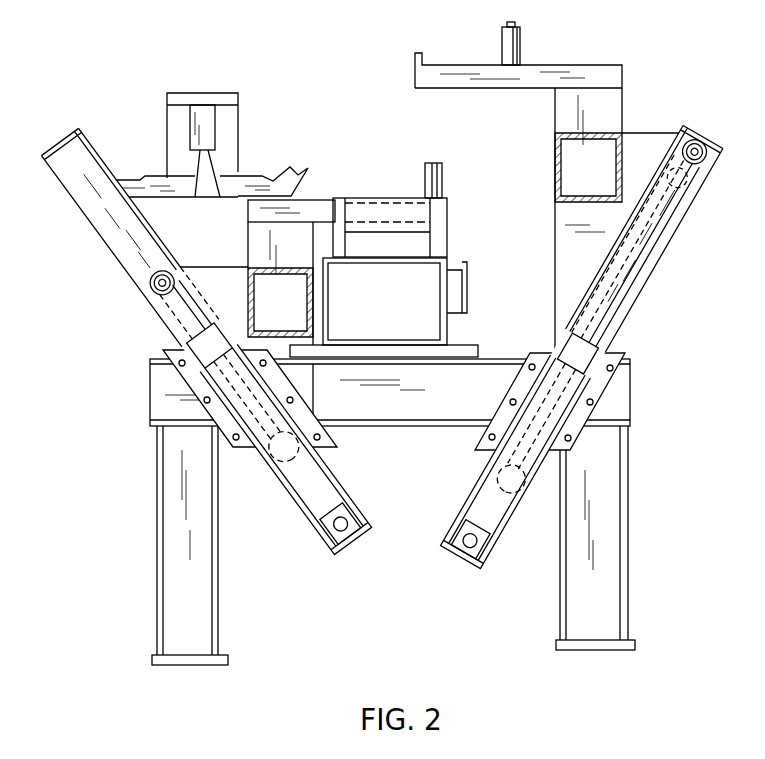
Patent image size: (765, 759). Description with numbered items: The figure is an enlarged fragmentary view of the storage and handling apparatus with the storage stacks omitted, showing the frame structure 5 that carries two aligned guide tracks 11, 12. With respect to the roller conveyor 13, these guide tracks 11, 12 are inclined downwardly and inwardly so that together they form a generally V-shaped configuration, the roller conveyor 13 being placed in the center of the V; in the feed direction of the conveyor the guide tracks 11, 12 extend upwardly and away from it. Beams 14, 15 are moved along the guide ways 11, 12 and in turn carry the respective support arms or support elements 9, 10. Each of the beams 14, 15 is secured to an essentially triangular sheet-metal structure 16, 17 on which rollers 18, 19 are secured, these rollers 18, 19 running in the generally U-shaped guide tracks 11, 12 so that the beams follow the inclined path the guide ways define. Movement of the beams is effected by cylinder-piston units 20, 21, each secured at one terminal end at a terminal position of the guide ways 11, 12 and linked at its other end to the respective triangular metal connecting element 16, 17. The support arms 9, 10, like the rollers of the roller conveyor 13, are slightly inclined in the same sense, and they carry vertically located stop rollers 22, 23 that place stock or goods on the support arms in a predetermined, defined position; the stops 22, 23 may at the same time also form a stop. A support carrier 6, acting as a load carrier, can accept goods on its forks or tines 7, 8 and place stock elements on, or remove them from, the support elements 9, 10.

The frame structure 5 is at (202, 625).
The support carrier 6 is at (205, 113).
The fork 7 is at (258, 172).
The tine 8 is at (150, 177).
The support element 9 is at (320, 210).
The support element 10 is at (452, 66).
The guide track 11 is at (68, 152).
The guide track 12 is at (663, 258).
The roller conveyor 13 is at (390, 233).
The beam 14 is at (263, 280).
The beam 15 is at (610, 157).
The triangular sheet-metal structure 16 is at (213, 287).
The triangular sheet-metal structure 17 is at (580, 248).
The roller 18 is at (168, 307).
The roller 19 is at (613, 312).
The cylinder-piston unit 20 is at (257, 417).
The cylinder-piston unit 21 is at (530, 443).
The stop roller 22 is at (427, 185).
The stop roller 23 is at (513, 43).